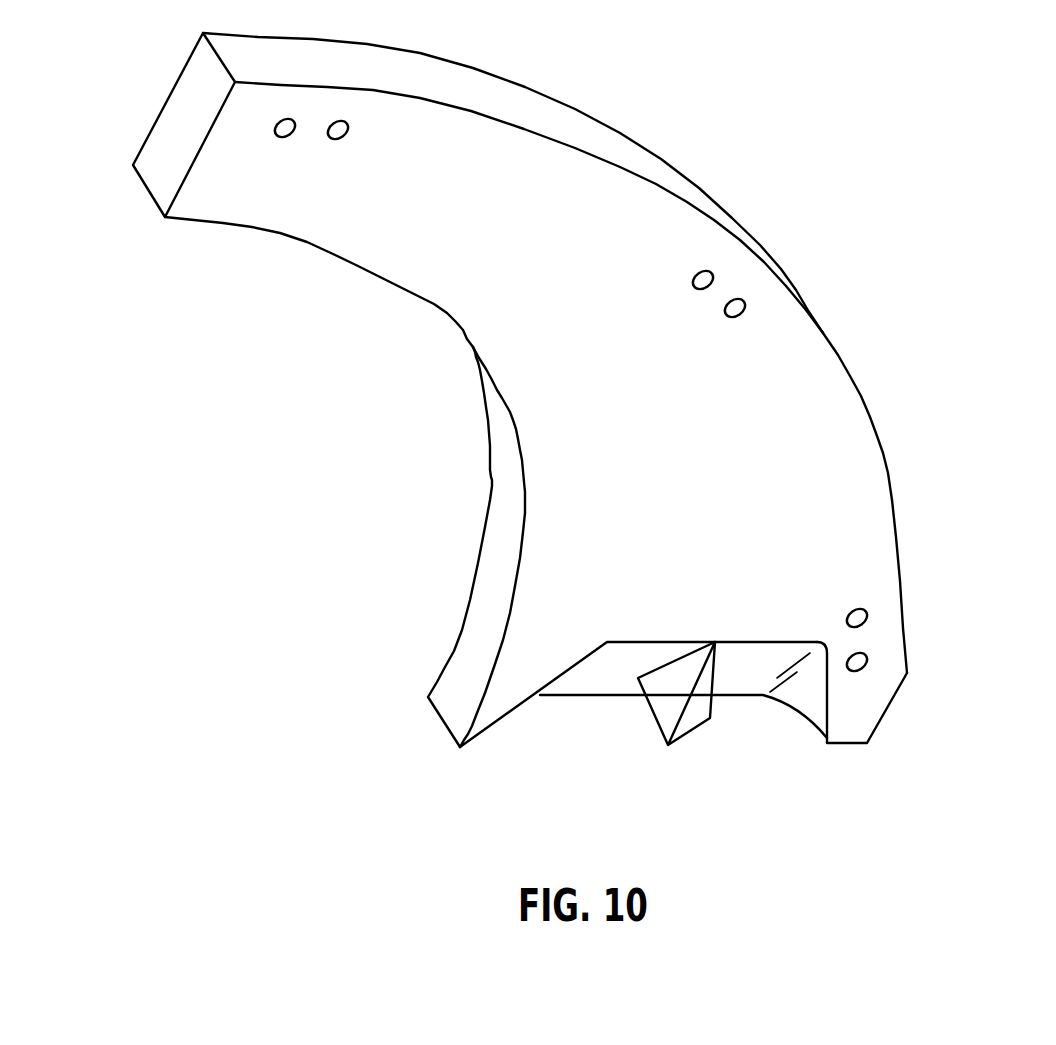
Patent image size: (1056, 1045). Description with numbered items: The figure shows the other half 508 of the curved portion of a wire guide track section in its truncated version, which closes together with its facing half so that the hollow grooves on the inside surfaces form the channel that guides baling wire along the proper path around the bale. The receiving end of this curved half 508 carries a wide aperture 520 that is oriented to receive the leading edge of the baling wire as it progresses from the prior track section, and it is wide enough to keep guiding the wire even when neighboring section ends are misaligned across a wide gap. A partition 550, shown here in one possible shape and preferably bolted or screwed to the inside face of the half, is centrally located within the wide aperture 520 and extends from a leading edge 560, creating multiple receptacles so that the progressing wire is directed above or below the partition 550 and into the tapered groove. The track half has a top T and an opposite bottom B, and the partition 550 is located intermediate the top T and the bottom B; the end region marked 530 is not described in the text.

The other half of the curved portion of wire guide track section 508 is at (398, 439).
The wide aperture 520 is at (597, 680).
The mounting end portion 530 is at (937, 602).
The partition 550 is at (693, 717).
The leading edge 560 is at (622, 698).
The bottom B is at (613, 142).
The top T is at (473, 653).